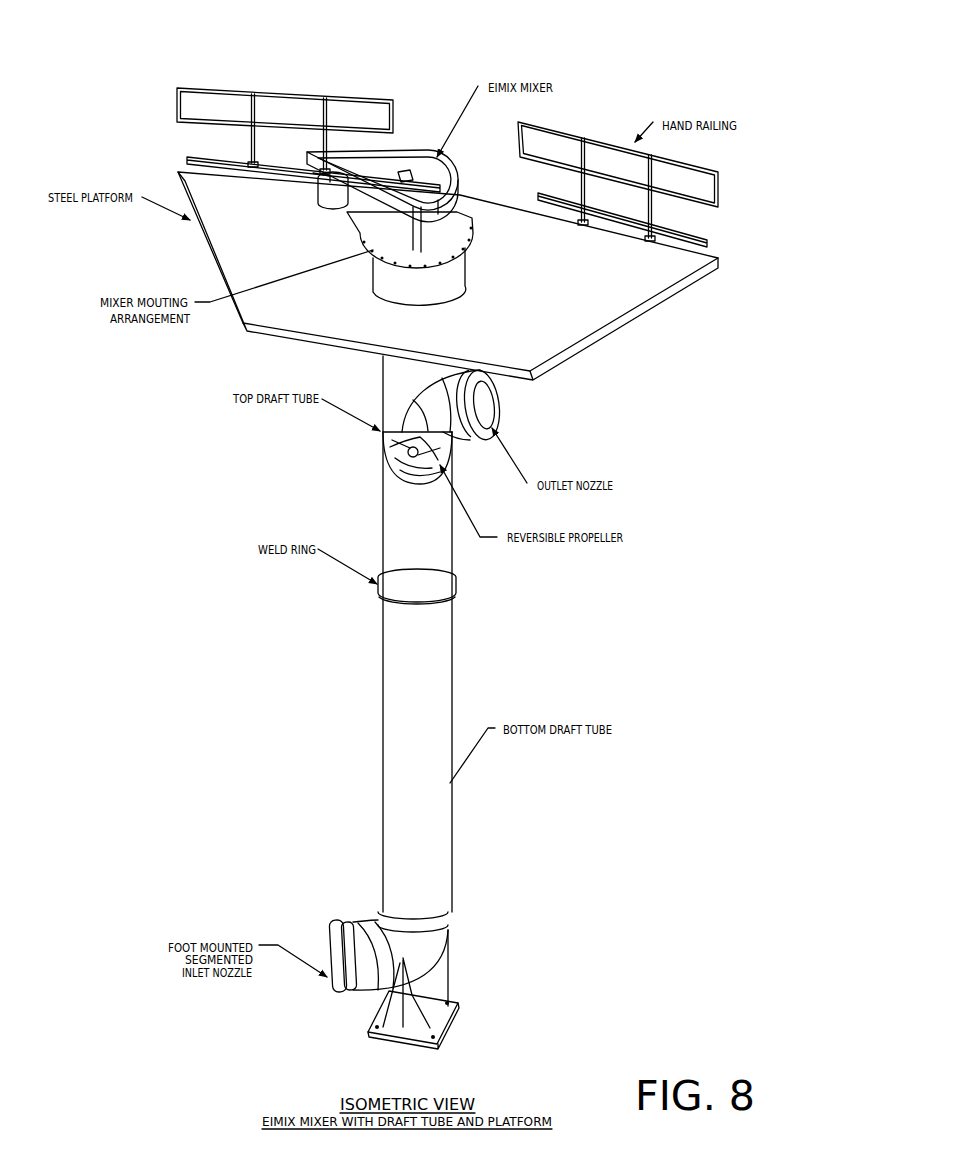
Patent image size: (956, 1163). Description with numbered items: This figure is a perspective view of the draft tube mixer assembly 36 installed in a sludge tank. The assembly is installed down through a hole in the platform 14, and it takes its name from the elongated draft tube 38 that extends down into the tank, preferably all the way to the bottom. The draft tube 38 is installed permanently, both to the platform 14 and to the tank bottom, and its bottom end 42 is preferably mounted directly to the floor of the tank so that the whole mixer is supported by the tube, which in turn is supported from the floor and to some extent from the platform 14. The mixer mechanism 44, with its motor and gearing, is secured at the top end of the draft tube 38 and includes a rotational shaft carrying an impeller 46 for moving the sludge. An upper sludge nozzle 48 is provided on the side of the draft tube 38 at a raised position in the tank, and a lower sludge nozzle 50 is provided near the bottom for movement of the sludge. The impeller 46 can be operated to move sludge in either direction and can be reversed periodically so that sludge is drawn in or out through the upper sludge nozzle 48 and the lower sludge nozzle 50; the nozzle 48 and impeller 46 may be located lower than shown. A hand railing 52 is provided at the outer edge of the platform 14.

The platform 14 is at (557, 307).
The draft tube mixer assembly 36 is at (413, 150).
The draft tube 38 is at (450, 697).
The bottom end of the draft tube 42 is at (427, 957).
The mixer mechanism 44 is at (453, 207).
The impeller 46 is at (438, 475).
The upper sludge nozzle 48 is at (483, 400).
The lower sludge nozzle 50 is at (325, 983).
The hand railing 52 is at (720, 183).